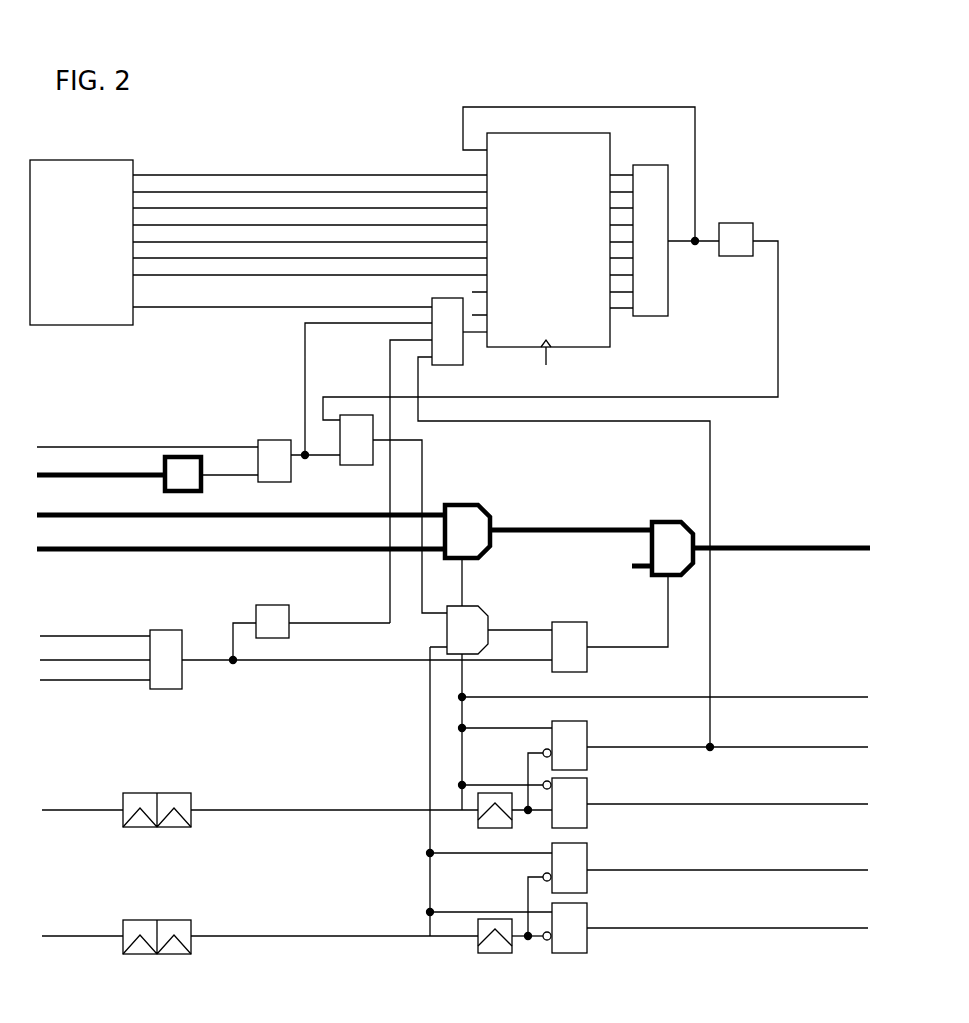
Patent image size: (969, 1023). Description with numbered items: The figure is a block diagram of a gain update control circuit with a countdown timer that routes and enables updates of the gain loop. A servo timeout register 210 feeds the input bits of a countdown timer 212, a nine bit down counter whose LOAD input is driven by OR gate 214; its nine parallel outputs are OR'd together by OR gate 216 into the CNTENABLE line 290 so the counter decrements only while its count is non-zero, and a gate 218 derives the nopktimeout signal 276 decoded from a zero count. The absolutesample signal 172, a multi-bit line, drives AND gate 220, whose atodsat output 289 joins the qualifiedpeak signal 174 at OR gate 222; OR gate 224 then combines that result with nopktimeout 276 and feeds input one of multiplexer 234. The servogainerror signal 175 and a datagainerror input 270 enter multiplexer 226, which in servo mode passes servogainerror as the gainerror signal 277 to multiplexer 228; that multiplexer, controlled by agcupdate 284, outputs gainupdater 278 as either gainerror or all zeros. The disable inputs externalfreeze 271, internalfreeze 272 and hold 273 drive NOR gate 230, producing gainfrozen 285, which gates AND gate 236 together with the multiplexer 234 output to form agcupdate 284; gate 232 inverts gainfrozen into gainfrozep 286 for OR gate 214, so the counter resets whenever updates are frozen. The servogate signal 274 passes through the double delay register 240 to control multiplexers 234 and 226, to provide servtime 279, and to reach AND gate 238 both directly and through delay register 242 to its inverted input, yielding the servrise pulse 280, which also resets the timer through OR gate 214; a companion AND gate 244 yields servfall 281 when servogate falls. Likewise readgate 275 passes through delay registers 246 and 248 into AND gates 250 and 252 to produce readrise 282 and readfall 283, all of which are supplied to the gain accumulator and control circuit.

The servo timeout register 210 is at (50, 160).
The countdown timer 212 is at (610, 150).
The OR gate 214 is at (448, 365).
The OR gate 216 is at (648, 316).
The NOT gate 218 is at (735, 223).
The AND gate 220 is at (185, 455).
The OR gate 222 is at (265, 440).
The OR gate 224 is at (360, 465).
The multiplexer 226 is at (462, 505).
The multiplexer 228 is at (672, 520).
The NOR gate 230 is at (170, 630).
The inverter gate 232 is at (272, 605).
The multiplexer 234 is at (480, 606).
The AND gate 236 is at (567, 622).
The AND gate 238 is at (587, 727).
The double delay register 240 is at (170, 793).
The delay register 242 is at (477, 817).
The AND gate 244 is at (587, 787).
The delay flip-flops 246 is at (165, 920).
The flip-flop 248 is at (494, 955).
The AND gate 250 is at (587, 851).
The AND gate 252 is at (567, 953).
The absolutesample signal 172 is at (155, 475).
The qualifiedpeak signal 174 is at (138, 447).
The servogainerror signal 175 is at (200, 512).
The datagainerror signal 270 is at (180, 545).
The externalfreeze signal 271 is at (140, 636).
The internalfreeze signal 272 is at (137, 662).
The hold signal 273 is at (85, 680).
The servogate signal 274 is at (110, 810).
The readgate signal 275 is at (113, 936).
The nopktimeout signal 276 is at (662, 397).
The gainerror signal 277 is at (615, 528).
The gainupdater signal 278 is at (727, 543).
The servtime signal 279 is at (752, 697).
The servrise signal 280 is at (755, 745).
The servfall signal 281 is at (742, 804).
The readrise signal 282 is at (740, 870).
The readfall signal 283 is at (747, 928).
The agcupdate signal 284 is at (617, 648).
The gainfrozen signal 285 is at (350, 672).
The gainfrozep signal 286 is at (388, 592).
The atodsat signal 289 is at (240, 475).
The cntenable line 290 is at (545, 107).